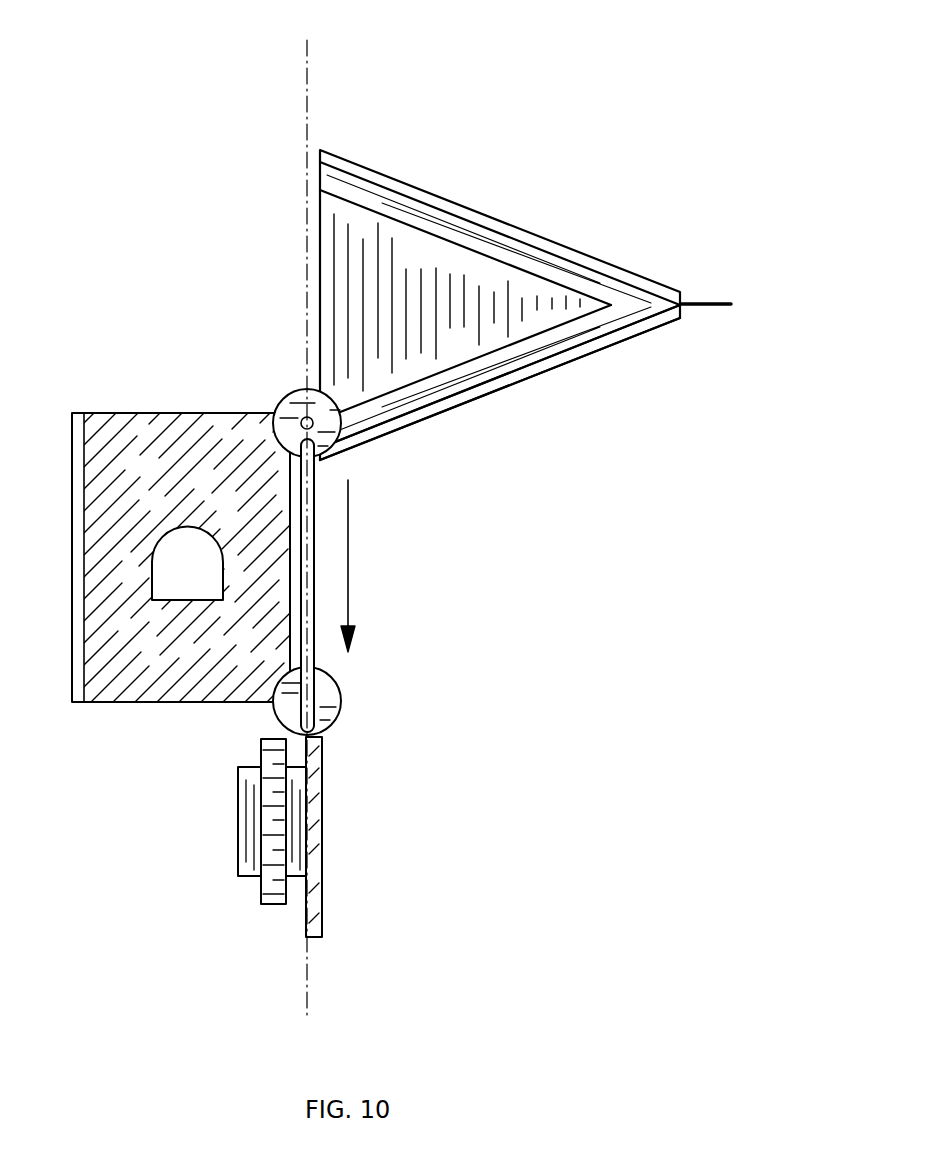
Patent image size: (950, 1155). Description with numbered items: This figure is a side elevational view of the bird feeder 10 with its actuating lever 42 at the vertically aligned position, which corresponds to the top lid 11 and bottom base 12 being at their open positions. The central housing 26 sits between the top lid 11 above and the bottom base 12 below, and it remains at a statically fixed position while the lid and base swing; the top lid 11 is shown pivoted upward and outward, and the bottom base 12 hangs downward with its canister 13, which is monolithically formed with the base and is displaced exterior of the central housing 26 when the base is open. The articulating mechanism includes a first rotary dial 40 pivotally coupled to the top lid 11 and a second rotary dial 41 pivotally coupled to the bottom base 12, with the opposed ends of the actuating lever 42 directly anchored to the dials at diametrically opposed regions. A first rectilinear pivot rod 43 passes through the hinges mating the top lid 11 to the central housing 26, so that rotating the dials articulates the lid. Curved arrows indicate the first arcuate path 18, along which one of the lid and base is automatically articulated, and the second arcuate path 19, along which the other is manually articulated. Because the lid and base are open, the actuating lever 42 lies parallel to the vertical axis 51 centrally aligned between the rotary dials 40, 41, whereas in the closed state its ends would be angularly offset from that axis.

The bird feeder 10 is at (560, 103).
The top lid 11 is at (473, 220).
The bottom base 12 is at (313, 852).
The canister 13 is at (273, 900).
The first arcuate path 18 is at (243, 250).
The second arcuate path 19 is at (190, 829).
The central housing 26 is at (97, 519).
The first rotary dial 40 is at (365, 428).
The second rotary dial 41 is at (334, 692).
The actuating lever 42 is at (309, 544).
The first rectilinear pivot rod 43 is at (283, 392).
The vertical axis 51 is at (309, 89).